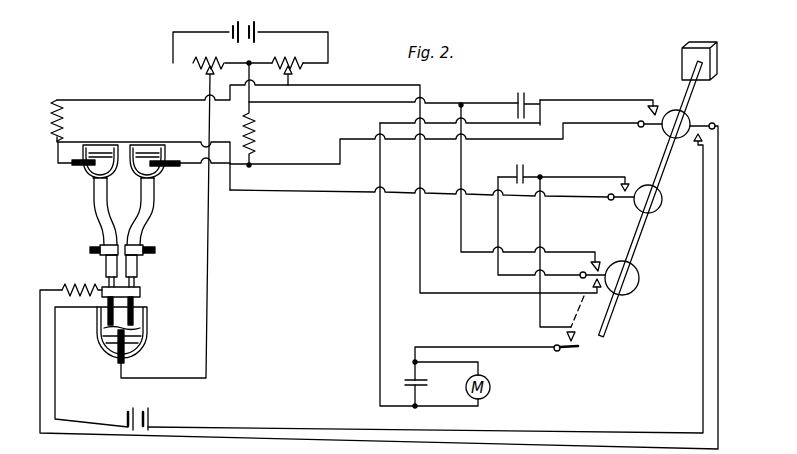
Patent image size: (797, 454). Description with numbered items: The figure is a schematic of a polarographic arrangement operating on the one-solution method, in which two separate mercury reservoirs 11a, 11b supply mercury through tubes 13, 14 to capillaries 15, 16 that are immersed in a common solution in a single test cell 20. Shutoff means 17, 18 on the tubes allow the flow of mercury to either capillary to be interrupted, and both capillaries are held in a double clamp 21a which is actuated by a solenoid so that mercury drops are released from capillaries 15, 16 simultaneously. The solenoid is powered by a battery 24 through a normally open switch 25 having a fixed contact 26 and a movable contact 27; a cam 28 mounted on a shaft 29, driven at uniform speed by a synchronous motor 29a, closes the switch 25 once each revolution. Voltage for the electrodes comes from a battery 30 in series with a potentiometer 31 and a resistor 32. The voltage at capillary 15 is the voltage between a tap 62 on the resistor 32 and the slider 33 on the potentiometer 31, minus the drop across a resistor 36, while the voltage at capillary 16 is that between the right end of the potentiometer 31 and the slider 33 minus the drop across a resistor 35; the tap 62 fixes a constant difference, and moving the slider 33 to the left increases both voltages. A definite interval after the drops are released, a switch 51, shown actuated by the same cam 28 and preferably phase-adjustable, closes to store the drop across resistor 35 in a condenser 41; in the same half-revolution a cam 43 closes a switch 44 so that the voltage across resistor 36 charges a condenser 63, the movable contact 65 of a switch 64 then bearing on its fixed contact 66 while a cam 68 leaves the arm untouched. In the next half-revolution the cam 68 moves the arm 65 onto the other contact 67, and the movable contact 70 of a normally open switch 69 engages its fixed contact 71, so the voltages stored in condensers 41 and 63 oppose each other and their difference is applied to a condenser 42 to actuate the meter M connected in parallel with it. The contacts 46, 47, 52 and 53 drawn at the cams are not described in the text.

The mercury reservoir 11a is at (84, 172).
The mercury reservoir 11b is at (160, 172).
The tube 13 is at (95, 210).
The tube 14 is at (150, 210).
The capillary 15 is at (106, 280).
The capillary 16 is at (137, 280).
The shutoff means 17 is at (92, 249).
The shutoff means 18 is at (146, 249).
The test cell 20 is at (146, 340).
The double clamp 21a is at (141, 293).
The battery 24 is at (148, 415).
The switch 25 is at (716, 132).
The fixed contact 26 is at (697, 145).
The movable contact 27 is at (705, 124).
The cam 28 is at (684, 116).
The shaft 29 is at (640, 233).
The synchronous motor 29a is at (682, 58).
The battery 30 is at (229, 28).
The potentiometer 31 is at (210, 58).
The resistor 32 is at (302, 60).
The slider 33 is at (207, 72).
The resistor 35 is at (256, 126).
The resistor 36 is at (60, 114).
The condenser 41 is at (528, 100).
The condenser 42 is at (419, 383).
The cam 43 is at (662, 196).
The switch 44 is at (638, 182).
The contact 46 is at (615, 189).
The contact 47 is at (610, 202).
The switch 51 is at (661, 99).
The contact 52 is at (647, 129).
The contact 53 is at (645, 112).
The tap 62 is at (294, 80).
The condenser 63 is at (526, 172).
The switch 64 is at (614, 253).
The movable contact 65 is at (582, 272).
The fixed contact 66 is at (592, 288).
The switch contact 67 is at (591, 260).
The cam 68 is at (640, 279).
The switch 69 is at (588, 349).
The movable contact 70 is at (560, 352).
The fixed contact 71 is at (580, 338).